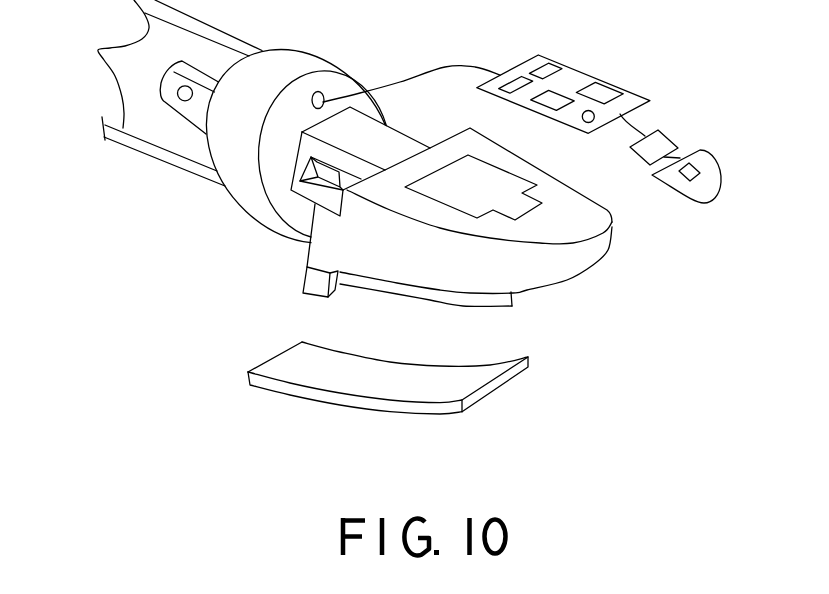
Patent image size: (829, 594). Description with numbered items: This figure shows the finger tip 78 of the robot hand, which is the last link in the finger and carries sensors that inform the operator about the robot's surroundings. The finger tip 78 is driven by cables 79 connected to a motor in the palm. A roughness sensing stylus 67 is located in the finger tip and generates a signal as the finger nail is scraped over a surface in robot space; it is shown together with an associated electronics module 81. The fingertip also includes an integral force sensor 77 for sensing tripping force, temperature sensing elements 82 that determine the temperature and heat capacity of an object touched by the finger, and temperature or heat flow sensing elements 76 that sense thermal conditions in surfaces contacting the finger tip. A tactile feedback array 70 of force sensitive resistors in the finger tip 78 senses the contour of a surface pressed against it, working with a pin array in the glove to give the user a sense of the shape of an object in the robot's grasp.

The roughness sensing stylus 67 is at (697, 172).
The tactile feedback array 70 is at (495, 308).
The temperature or heat flow sensing elements 76 is at (410, 389).
The integral force sensor 77 is at (298, 182).
The finger tip 78 is at (605, 101).
The cables 79 is at (98, 50).
The electronics module 81 is at (601, 82).
The temperature sensing elements 82 is at (315, 282).